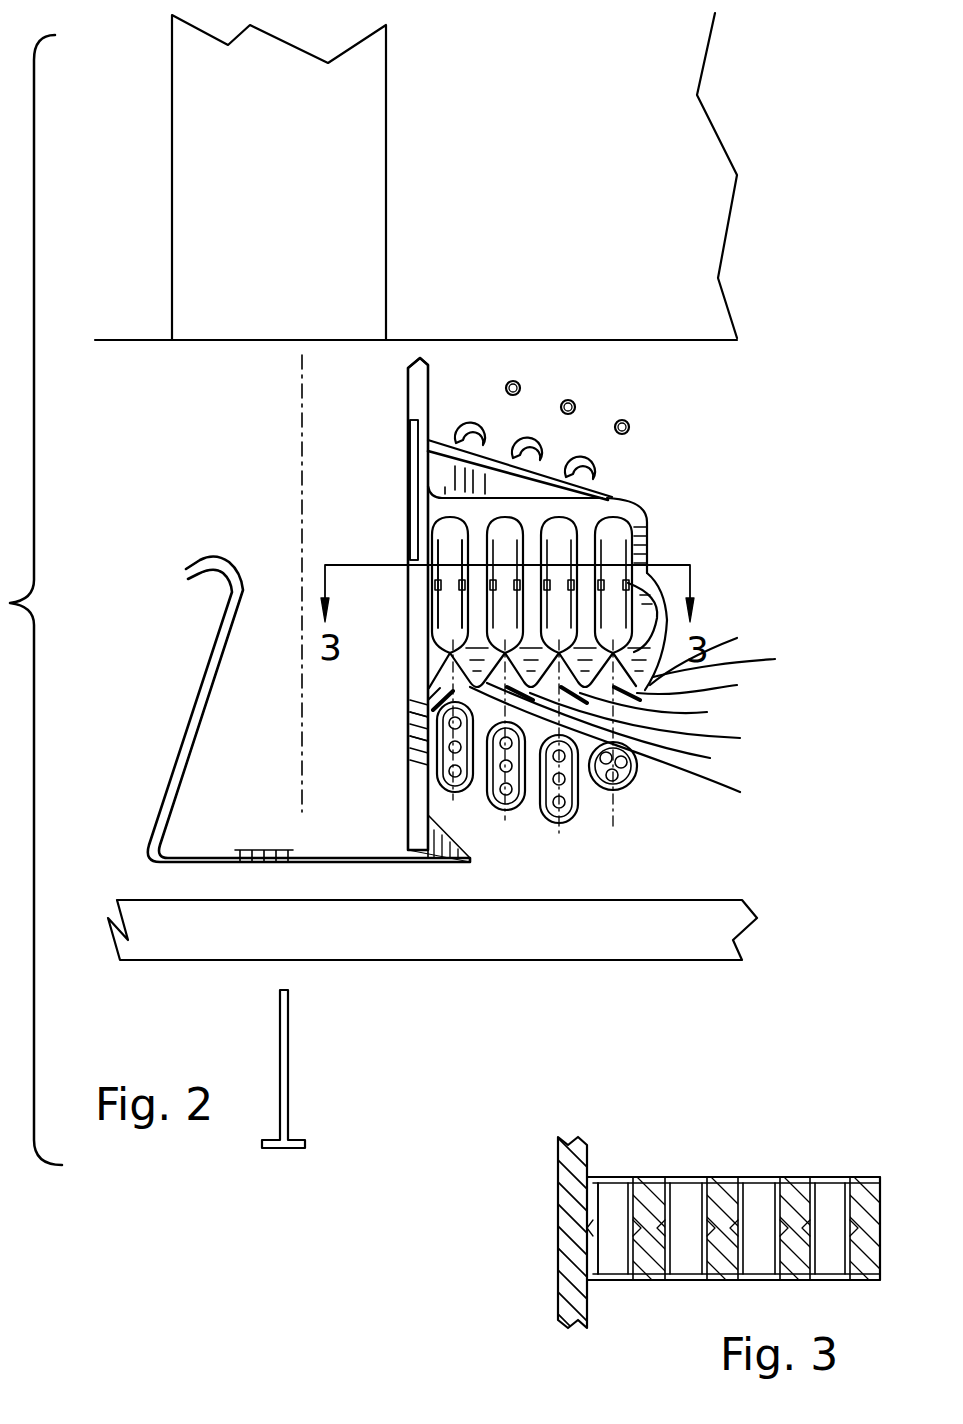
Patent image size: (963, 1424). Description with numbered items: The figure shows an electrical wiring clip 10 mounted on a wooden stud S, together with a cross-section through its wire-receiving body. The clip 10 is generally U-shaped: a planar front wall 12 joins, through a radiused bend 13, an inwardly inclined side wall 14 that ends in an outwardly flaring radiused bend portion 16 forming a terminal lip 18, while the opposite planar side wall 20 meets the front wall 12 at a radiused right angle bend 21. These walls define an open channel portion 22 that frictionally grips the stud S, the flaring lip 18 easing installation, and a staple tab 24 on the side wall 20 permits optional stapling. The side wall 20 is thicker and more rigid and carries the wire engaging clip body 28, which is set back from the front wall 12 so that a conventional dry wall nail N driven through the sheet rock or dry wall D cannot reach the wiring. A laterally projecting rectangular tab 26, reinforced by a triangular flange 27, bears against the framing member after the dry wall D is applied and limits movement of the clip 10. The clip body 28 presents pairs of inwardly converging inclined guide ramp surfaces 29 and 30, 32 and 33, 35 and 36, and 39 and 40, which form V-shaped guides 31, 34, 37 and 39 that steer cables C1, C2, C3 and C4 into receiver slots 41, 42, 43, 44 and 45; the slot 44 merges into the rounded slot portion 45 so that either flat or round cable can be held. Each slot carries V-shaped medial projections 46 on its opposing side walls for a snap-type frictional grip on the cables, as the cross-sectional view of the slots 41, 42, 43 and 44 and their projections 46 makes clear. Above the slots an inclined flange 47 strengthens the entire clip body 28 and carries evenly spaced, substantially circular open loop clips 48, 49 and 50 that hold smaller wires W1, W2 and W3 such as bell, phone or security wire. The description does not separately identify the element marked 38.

In FIG. 2, the stud S is at (370, 146).
In FIG. 2, the electrical wiring clip 10 is at (145, 778).
In FIG. 2, the front wall 12 is at (175, 863).
In FIG. 2, the radiused bend 13 is at (170, 850).
In FIG. 2, the inwardly inclined side wall 14 is at (195, 720).
In FIG. 2, the radiused bend portion 16 is at (214, 578).
In FIG. 2, the terminal lip 18 is at (190, 566).
In FIG. 2, the side wall 20 is at (410, 790).
In FIG. 3, the side wall 20 is at (560, 1235).
In FIG. 2, the radiused right angle bend 21 is at (408, 840).
In FIG. 2, the open channel portion 22 is at (250, 478).
In FIG. 2, the staple tab 24 is at (410, 425).
In FIG. 2, the laterally projecting rectangular tab 26 is at (470, 857).
In FIG. 2, the triangular flange 27 is at (470, 838).
In FIG. 2, the wire engaging clip body 28 is at (645, 492).
In FIG. 2, the guide ramp surface 29 is at (436, 688).
In FIG. 2, the guide ramp surface 30 is at (408, 718).
In FIG. 2, the V-shaped guide 31 is at (420, 735).
In FIG. 2, the guide ramp surface 32 is at (624, 747).
In FIG. 2, the guide ramp surface 33 is at (653, 724).
In FIG. 2, the V-shaped guide 34 is at (613, 731).
In FIG. 2, the guide ramp surface 35 is at (432, 652).
In FIG. 2, the guide ramp surface 36 is at (713, 654).
In FIG. 2, the V-shaped guide 37 is at (660, 712).
In FIG. 2, the streamline 38 is at (706, 688).
In FIG. 2, the guide ramp surface 39 is at (733, 662).
In FIG. 2, the guide ramp surface 40 is at (657, 628).
In FIG. 2, the receiver slot 41 is at (445, 522).
In FIG. 3, the receiver slot 41 is at (612, 1190).
In FIG. 2, the receiver slot 42 is at (497, 520).
In FIG. 3, the receiver slot 42 is at (685, 1190).
In FIG. 2, the receiver slot 43 is at (560, 520).
In FIG. 3, the receiver slot 43 is at (758, 1190).
In FIG. 2, the receiver slot 44 is at (650, 532).
In FIG. 3, the receiver slot 44 is at (830, 1190).
In FIG. 2, the rounded slot portion 45 is at (650, 580).
In FIG. 2, the V-shaped medial projection 46 is at (438, 582).
In FIG. 3, the V-shaped medial projection 46 is at (600, 1240).
In FIG. 2, the inclined flange 47 is at (410, 465).
In FIG. 2, the open loop clip 48 is at (490, 397).
In FIG. 2, the open loop clip 49 is at (548, 418).
In FIG. 2, the open loop clip 50 is at (605, 440).
In FIG. 2, the wire W1 is at (486, 445).
In FIG. 2, the wire W2 is at (543, 462).
In FIG. 2, the wire W3 is at (596, 483).
In FIG. 2, the cable C1 is at (445, 770).
In FIG. 2, the cable C2 is at (504, 810).
In FIG. 2, the cable C3 is at (580, 810).
In FIG. 2, the cable C4 is at (638, 782).
In FIG. 2, the dry wall D is at (470, 940).
In FIG. 2, the nail N is at (287, 1062).